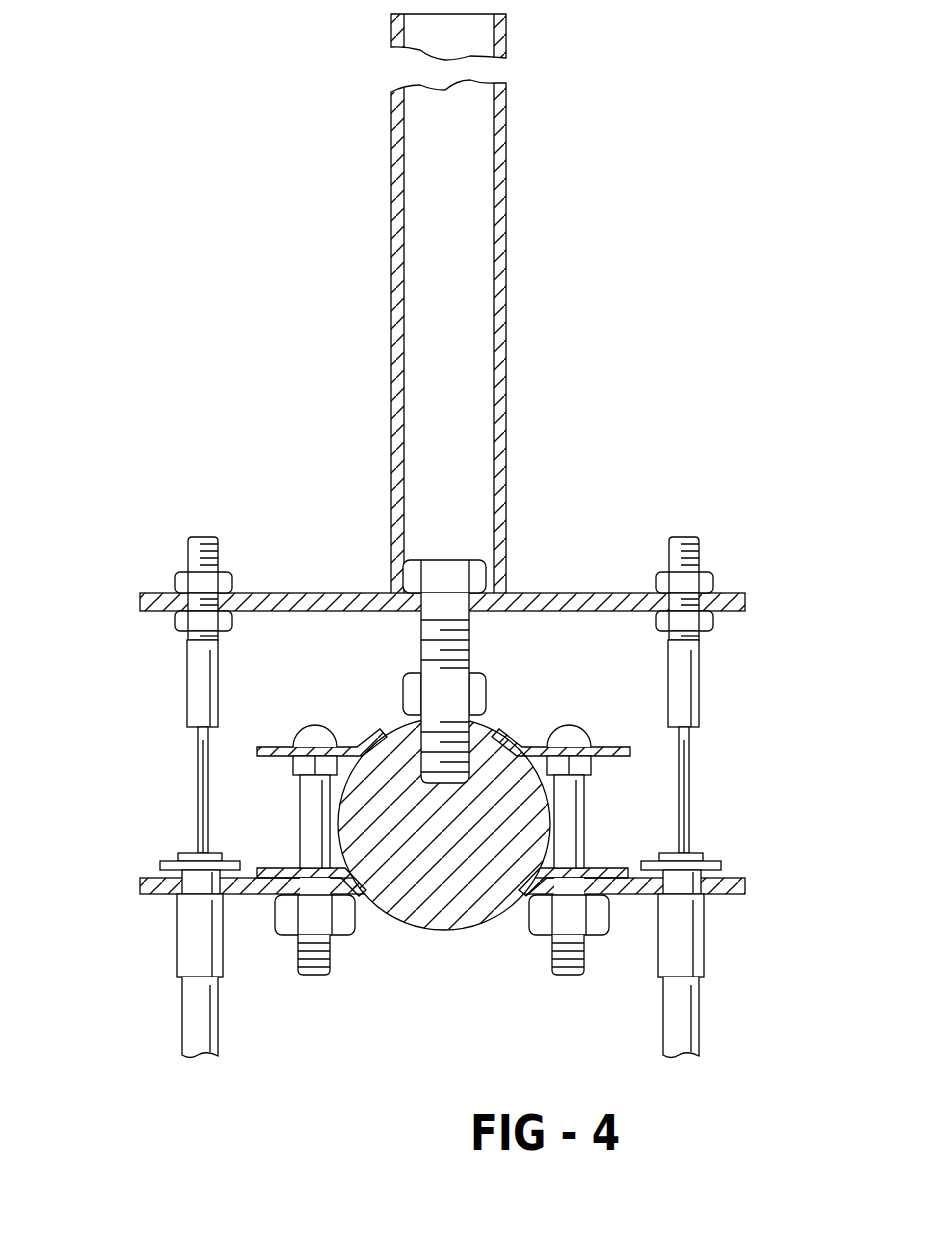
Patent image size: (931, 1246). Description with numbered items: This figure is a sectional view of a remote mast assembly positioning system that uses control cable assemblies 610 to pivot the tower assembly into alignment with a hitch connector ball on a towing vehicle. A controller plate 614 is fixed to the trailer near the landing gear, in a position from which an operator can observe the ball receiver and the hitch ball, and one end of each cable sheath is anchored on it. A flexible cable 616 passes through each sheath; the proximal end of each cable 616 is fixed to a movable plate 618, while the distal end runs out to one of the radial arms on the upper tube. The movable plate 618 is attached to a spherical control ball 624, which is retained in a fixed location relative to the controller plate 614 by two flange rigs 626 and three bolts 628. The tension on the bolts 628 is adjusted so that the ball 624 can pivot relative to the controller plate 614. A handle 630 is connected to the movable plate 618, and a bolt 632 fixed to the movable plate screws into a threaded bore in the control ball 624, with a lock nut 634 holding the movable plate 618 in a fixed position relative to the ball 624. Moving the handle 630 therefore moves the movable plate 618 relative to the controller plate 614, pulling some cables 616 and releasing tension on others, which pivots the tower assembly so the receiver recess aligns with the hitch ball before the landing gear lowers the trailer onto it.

The control cable assembly 610 is at (178, 928).
The controller plate 614 is at (727, 895).
The flexible cable 616 is at (198, 760).
The movable plate 618 is at (716, 594).
The spherical control ball 624 is at (408, 932).
The flange rig 626 is at (258, 753).
The bolt 628 is at (300, 977).
The handle 630 is at (506, 213).
The bolt 632 is at (470, 633).
The lock nut 634 is at (400, 690).